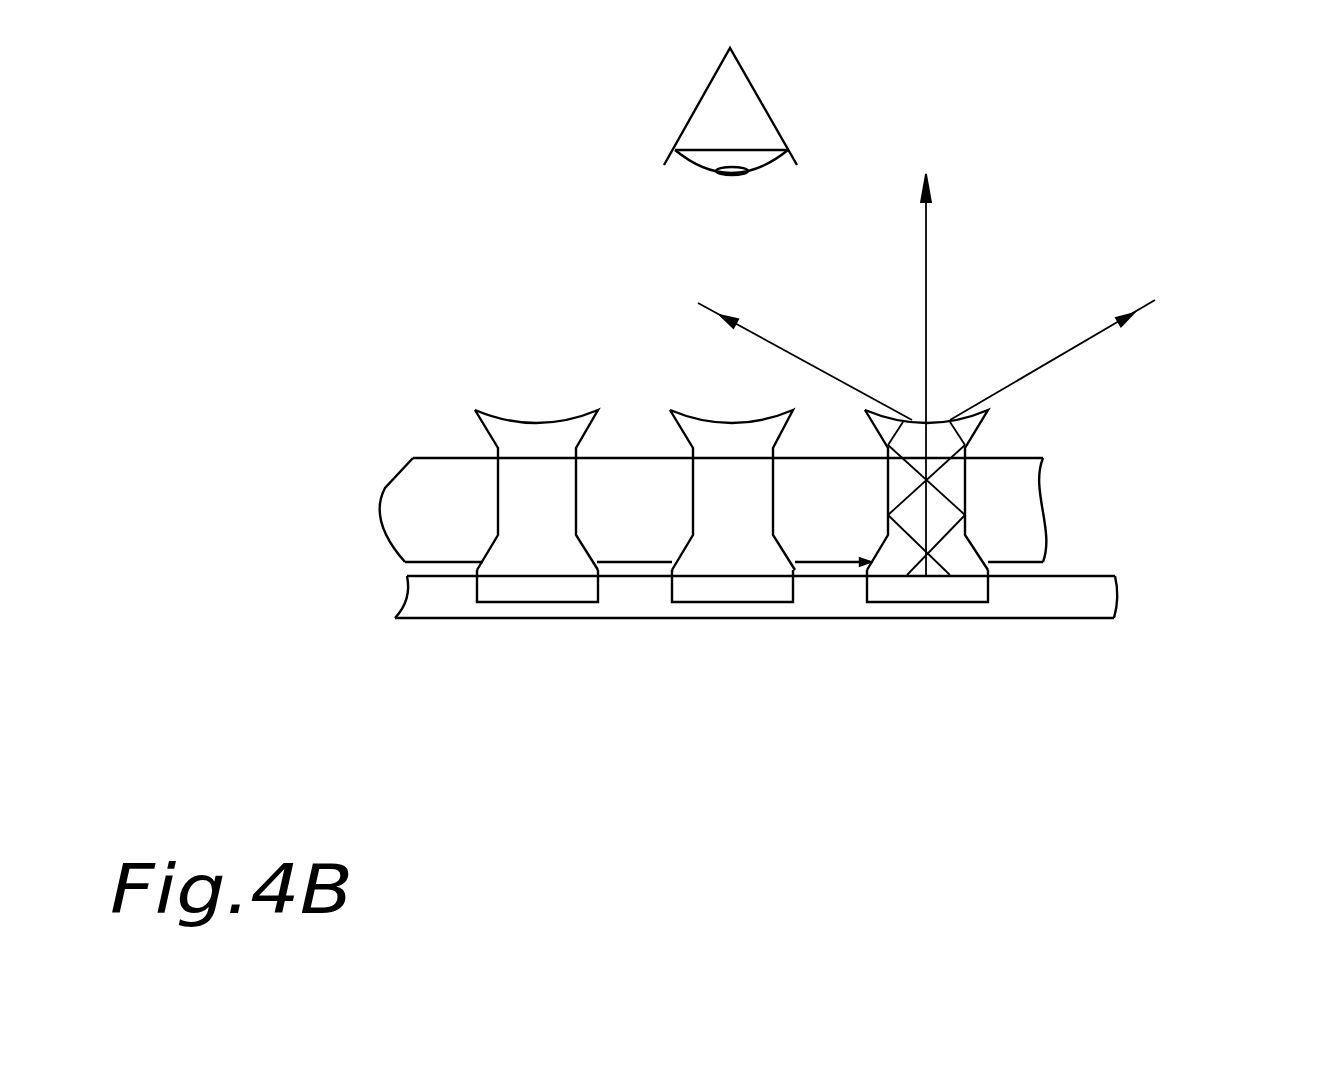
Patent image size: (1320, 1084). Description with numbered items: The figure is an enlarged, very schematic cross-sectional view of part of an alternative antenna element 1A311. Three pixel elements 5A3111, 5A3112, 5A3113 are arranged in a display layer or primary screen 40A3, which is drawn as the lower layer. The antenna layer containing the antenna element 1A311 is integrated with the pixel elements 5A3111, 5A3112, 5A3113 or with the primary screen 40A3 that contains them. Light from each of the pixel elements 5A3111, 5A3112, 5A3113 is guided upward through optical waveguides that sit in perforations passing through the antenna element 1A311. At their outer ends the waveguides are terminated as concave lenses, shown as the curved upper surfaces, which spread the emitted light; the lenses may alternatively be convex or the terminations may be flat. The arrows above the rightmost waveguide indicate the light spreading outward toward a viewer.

The antenna element 1A311 is at (1040, 447).
The primary screen 40A3 is at (1090, 602).
The pixel element 5A3111 is at (548, 592).
The pixel element 5A3112 is at (742, 592).
The pixel element 5A3113 is at (937, 592).